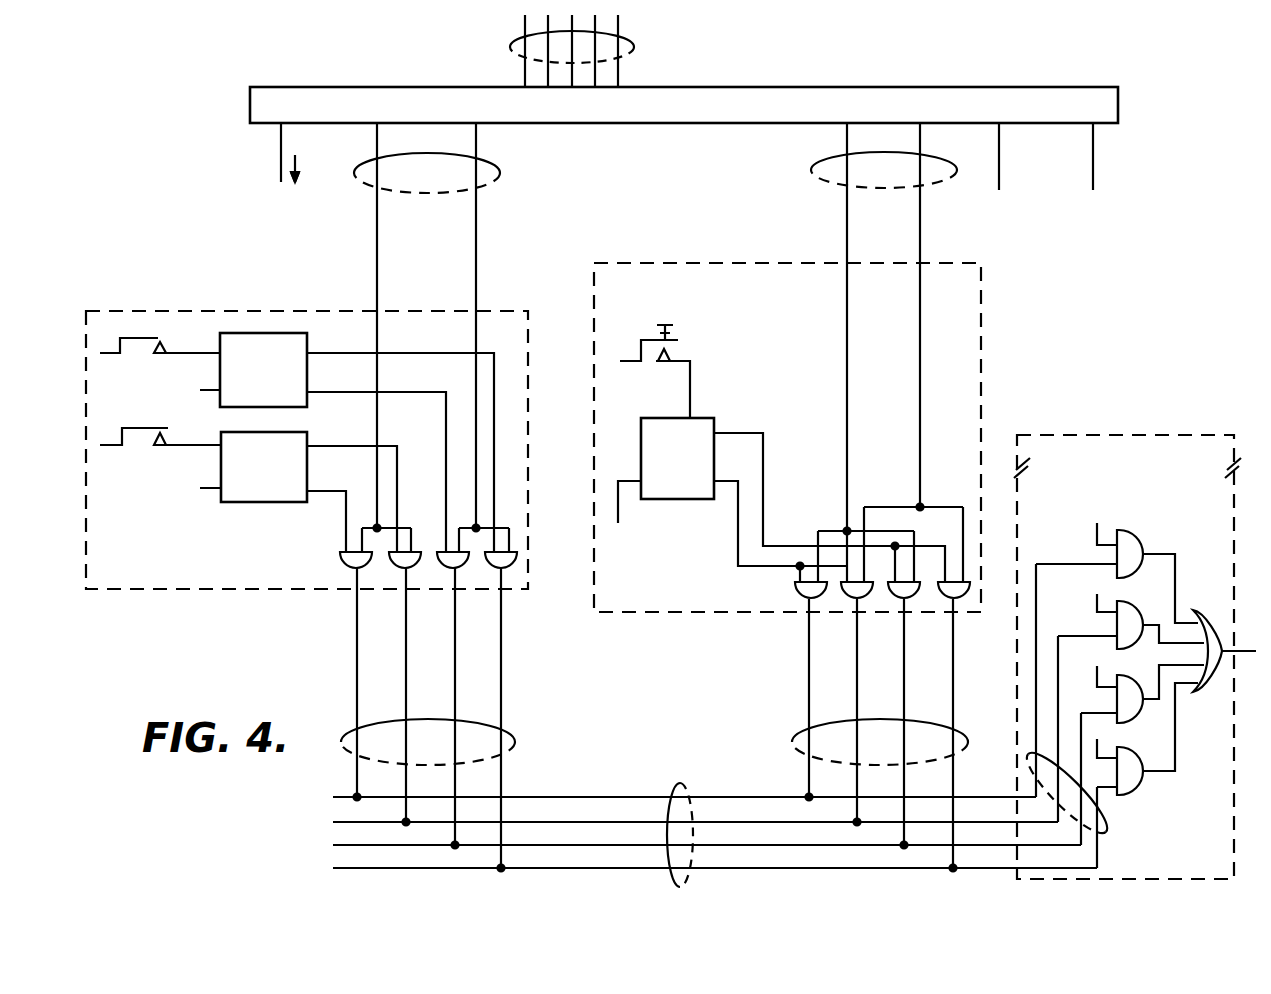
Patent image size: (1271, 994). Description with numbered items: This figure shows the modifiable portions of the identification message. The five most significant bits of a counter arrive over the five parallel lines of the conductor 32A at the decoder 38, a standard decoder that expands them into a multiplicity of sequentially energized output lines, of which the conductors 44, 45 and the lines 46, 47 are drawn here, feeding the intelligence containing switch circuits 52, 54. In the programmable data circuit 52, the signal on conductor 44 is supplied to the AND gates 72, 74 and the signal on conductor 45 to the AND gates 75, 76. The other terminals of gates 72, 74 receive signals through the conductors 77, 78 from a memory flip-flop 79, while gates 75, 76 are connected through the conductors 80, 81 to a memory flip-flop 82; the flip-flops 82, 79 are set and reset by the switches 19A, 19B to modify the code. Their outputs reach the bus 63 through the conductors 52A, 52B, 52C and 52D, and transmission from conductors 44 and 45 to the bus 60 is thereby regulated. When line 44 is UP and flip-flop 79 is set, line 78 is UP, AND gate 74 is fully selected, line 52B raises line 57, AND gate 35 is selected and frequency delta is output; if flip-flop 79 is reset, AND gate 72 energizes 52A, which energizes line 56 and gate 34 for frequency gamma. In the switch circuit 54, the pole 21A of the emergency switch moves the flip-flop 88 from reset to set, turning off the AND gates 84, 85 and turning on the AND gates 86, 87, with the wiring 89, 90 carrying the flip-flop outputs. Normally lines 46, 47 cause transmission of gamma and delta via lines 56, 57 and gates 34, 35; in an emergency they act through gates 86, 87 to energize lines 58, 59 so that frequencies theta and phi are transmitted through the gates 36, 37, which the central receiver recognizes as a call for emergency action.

The conductor 32A is at (634, 45).
The decoder 38 is at (797, 87).
The conductor 44 is at (378, 230).
The conductor 45 is at (477, 234).
The decoder output line 46 is at (846, 204).
The line 47 is at (920, 204).
The programmable data circuit 52 is at (490, 311).
The switch circuit 54 is at (718, 263).
The switch 19A is at (150, 338).
The switch 19B is at (150, 428).
The memory flip-flop 82 is at (309, 349).
The conductor 81 is at (434, 356).
The conductor 80 is at (444, 414).
The conductor 78 is at (398, 476).
The conductor 77 is at (327, 490).
The memory flip-flop 79 is at (259, 503).
The AND gate 72 is at (340, 560).
The AND gate 74 is at (392, 570).
The AND gate 75 is at (447, 566).
The AND gate 76 is at (494, 568).
The conductor 52A is at (356, 645).
The conductor 52B is at (405, 663).
The conductor 52C is at (456, 655).
The conductor 52D is at (502, 660).
The line 56 is at (333, 797).
The line 57 is at (333, 822).
The line 58 is at (333, 845).
The line 59 is at (333, 868).
The bus 60 is at (687, 790).
The pole 21A is at (668, 327).
The flip-flop 88 is at (702, 418).
The flip flop output line 89 is at (738, 525).
The flip flop output line 90 is at (764, 456).
The AND gate 84 is at (802, 590).
The AND gate 85 is at (850, 602).
The AND gate 86 is at (898, 602).
The AND gate 87 is at (950, 602).
The gate 34 is at (1130, 535).
The AND gate 35 is at (1128, 604).
The gate 36 is at (1130, 720).
The gate 37 is at (1135, 789).
The bus 63 is at (1108, 826).